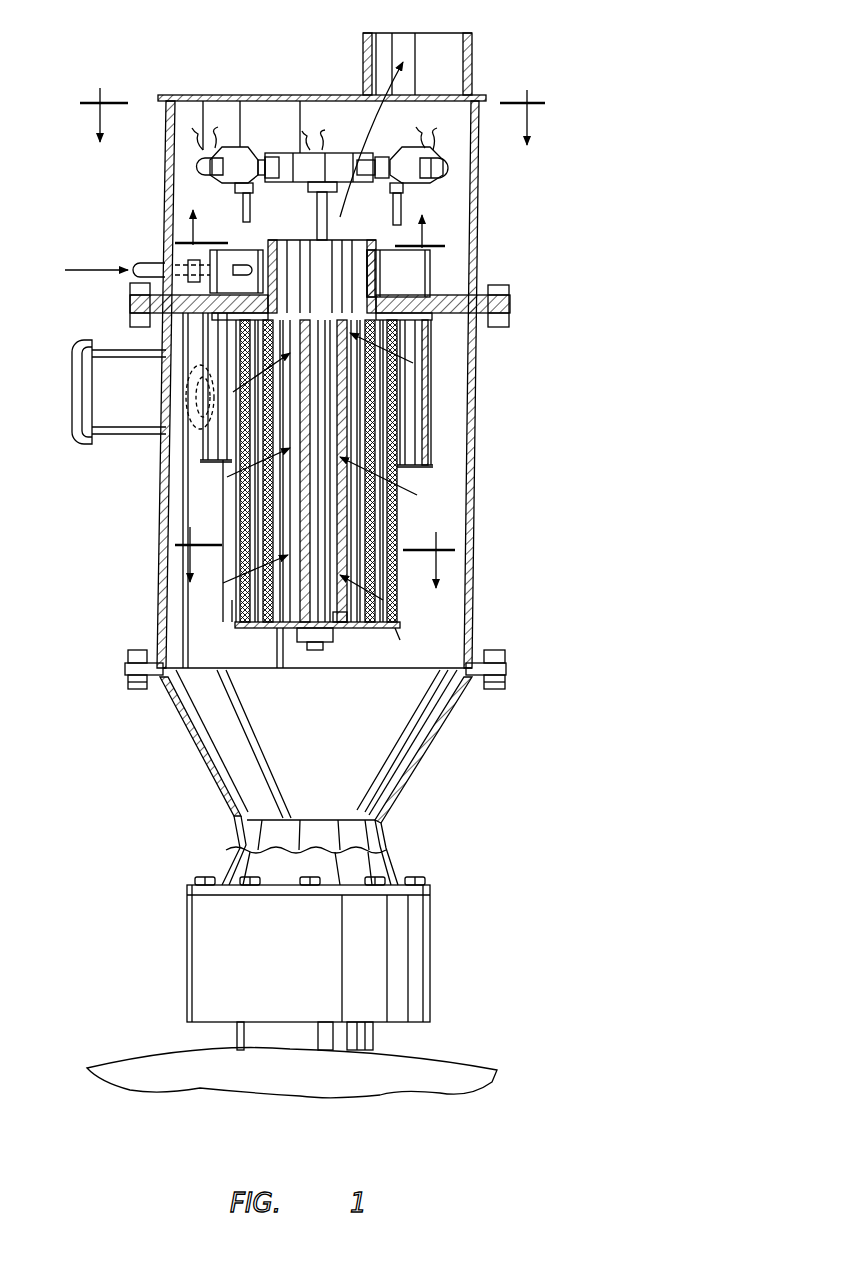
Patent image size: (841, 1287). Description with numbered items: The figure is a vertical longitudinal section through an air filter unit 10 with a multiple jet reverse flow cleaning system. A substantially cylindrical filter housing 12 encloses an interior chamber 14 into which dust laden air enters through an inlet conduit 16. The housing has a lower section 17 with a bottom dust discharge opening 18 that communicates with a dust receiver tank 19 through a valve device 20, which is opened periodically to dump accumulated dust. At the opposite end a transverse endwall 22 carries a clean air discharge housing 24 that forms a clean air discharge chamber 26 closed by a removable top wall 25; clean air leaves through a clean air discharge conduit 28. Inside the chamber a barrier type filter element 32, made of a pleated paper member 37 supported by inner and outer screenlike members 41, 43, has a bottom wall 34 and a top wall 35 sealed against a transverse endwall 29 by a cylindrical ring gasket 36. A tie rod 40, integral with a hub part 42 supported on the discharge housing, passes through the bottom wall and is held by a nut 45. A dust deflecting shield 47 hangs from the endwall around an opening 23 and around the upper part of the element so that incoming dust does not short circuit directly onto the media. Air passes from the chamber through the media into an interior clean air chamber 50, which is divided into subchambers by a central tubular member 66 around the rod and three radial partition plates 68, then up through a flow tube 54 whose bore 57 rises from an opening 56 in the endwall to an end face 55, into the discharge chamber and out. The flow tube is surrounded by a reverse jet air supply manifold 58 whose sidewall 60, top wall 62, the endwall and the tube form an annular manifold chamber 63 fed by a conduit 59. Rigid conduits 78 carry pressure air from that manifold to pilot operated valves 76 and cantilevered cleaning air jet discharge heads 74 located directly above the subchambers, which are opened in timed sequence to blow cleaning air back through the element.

The air filter unit 10 is at (317, 562).
The filter housing 12 is at (470, 532).
The interior chamber 14 is at (212, 512).
The inlet conduit 16 is at (120, 432).
The lower section 17 is at (455, 716).
The bottom dust discharge opening 18 is at (372, 812).
The dust receiver tank 19 is at (460, 1063).
The valve device 20 is at (432, 938).
The transverse endwall 22 is at (185, 318).
The opening 23 is at (185, 360).
The clean air discharge housing 24 is at (166, 185).
The top wall 25 is at (205, 95).
The clean air discharge chamber 26 is at (334, 127).
The clean air discharge conduit 28 is at (475, 45).
The transverse endwall 29 is at (400, 297).
The filter element 32 is at (400, 477).
The bottom wall 34 is at (283, 670).
The top wall 35 is at (410, 322).
The cylindrical ring gasket 36 is at (400, 345).
The pleated paper member 37 is at (240, 590).
The tie rod 40 is at (345, 670).
The inner cylindrical screenlike member 41 is at (397, 632).
The hub part 42 is at (342, 248).
The outer cylindrical screenlike member 43 is at (235, 613).
The nut 45 is at (307, 648).
The dust deflecting shield 47 is at (203, 458).
The interior clean air chamber 50 is at (302, 444).
The flow tube 54 is at (367, 262).
The end face 55 is at (295, 215).
The opening 56 is at (280, 252).
The bore 57 is at (360, 262).
The reverse jet air supply manifold 58 is at (212, 255).
The conduit 59 is at (143, 262).
The sidewall 60 is at (132, 303).
The top wall 62 is at (242, 252).
The annular manifold chamber 63 is at (414, 290).
The central tubular member 66 is at (340, 612).
The partition plates 68 is at (280, 628).
The cleaning air jet discharge heads 74 is at (347, 187).
The pilot operated valves 76 is at (233, 150).
The conduits 78 is at (242, 202).